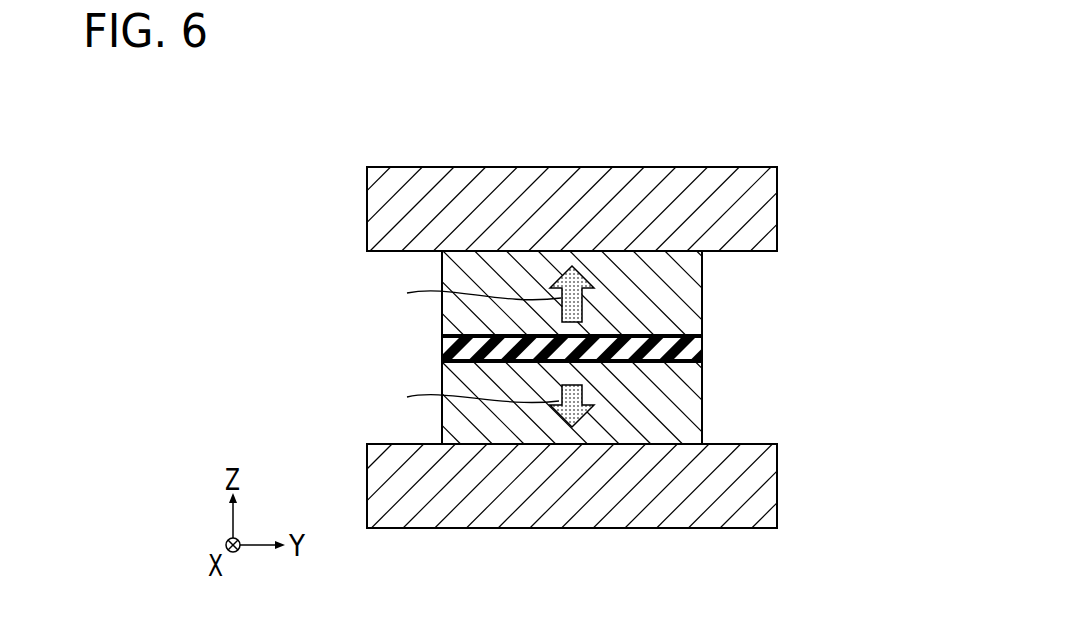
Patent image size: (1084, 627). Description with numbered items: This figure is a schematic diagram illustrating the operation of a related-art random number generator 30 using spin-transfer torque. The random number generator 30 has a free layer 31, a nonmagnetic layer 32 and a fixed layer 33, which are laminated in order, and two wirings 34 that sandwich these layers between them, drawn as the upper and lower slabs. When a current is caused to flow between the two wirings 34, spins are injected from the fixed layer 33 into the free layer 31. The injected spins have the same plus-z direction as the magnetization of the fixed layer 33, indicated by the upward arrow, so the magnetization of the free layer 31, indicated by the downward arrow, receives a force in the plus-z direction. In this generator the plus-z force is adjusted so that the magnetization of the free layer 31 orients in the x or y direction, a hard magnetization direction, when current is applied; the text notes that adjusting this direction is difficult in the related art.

The random number generator using STT 30 is at (626, 282).
The free layer 31 is at (688, 403).
The nonmagnetic layer 32 is at (693, 345).
The fixed layer 33 is at (687, 297).
The wiring 34 is at (743, 212).